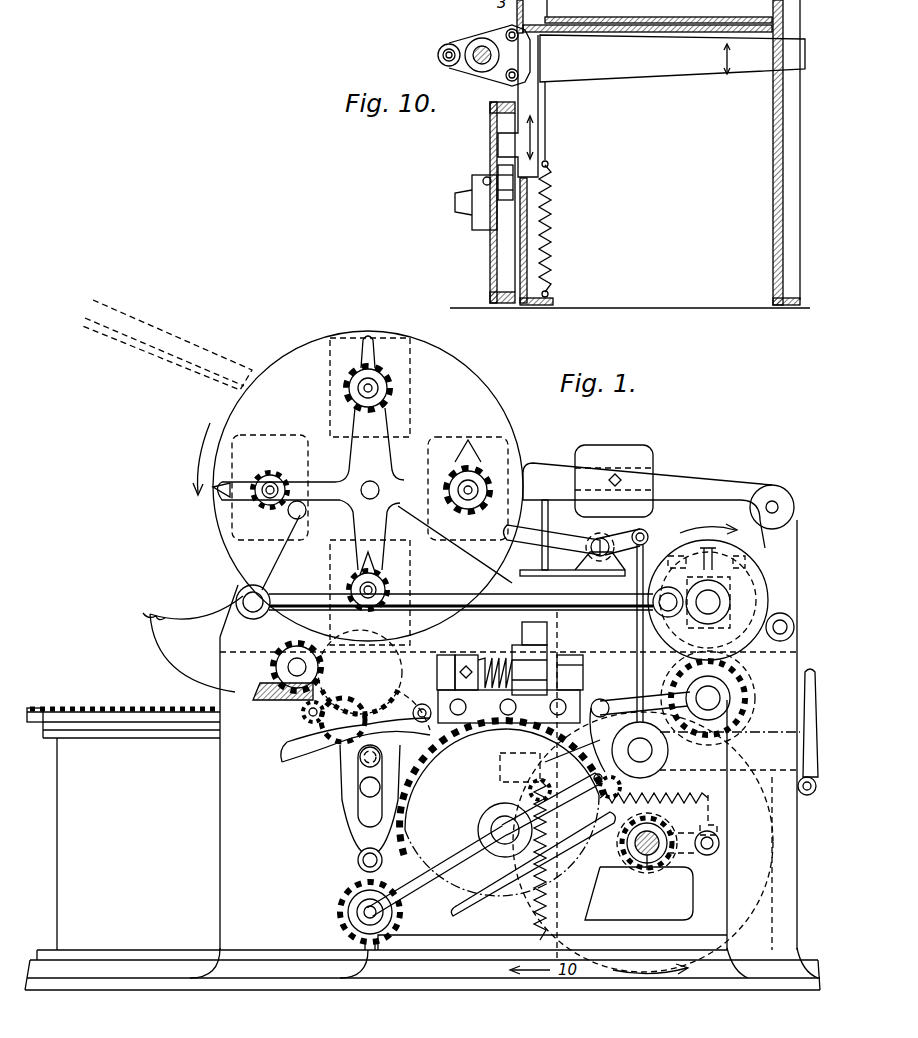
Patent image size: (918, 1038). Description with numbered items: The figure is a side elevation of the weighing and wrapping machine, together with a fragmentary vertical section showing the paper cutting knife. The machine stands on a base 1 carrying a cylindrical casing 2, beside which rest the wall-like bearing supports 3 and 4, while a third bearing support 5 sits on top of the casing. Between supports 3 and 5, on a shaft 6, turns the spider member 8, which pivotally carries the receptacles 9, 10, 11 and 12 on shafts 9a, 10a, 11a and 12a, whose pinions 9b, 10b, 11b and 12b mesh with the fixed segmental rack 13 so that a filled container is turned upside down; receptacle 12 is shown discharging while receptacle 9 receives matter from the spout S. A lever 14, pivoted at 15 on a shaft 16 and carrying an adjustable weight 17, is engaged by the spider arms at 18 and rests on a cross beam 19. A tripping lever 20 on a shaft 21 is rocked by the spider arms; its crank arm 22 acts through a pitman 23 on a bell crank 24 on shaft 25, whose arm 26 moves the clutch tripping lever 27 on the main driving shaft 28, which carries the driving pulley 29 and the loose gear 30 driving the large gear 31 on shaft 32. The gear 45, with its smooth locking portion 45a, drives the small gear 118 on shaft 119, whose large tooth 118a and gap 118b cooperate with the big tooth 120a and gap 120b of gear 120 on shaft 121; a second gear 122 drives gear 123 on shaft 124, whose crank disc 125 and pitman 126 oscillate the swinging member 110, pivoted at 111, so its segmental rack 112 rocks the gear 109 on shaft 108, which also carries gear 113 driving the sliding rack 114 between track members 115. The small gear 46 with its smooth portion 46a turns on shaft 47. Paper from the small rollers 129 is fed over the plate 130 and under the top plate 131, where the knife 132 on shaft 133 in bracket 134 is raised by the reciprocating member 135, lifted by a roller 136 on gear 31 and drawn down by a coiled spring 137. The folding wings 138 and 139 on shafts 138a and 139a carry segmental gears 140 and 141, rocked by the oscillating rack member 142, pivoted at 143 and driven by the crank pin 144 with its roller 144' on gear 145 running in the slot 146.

In FIG. 1, the base 1 is at (155, 972).
In FIG. 1, the cylindrical casing 2 is at (78, 812).
In FIG. 1, the bearing support 3 is at (798, 545).
In FIG. 1, the bearing support 4 is at (413, 937).
In FIG. 10, the bearing support 5 is at (783, 146).
In FIG. 1, the shaft 6 is at (374, 488).
In FIG. 1, the spider member 8 is at (340, 478).
In FIG. 1, the receptacle 9 is at (270, 452).
In FIG. 1, the shaft 9a is at (273, 486).
In FIG. 1, the pinion 9b is at (262, 480).
In FIG. 1, the receptacle 10 is at (398, 368).
In FIG. 1, the shaft 10a is at (380, 389).
In FIG. 1, the pinion 10b is at (360, 375).
In FIG. 1, the receptacle 11 is at (472, 452).
In FIG. 1, the shaft 11a is at (470, 488).
In FIG. 1, the pinion 11b is at (462, 482).
In FIG. 1, the receptacle 12 is at (338, 575).
In FIG. 1, the shaft 12a is at (374, 586).
In FIG. 1, the pinion 12b is at (360, 584).
In FIG. 1, the segmental rack 13 is at (440, 592).
In FIG. 1, the lever 14 is at (692, 484).
In FIG. 1, the pivot 15 is at (772, 488).
In FIG. 1, the shaft 16 is at (777, 505).
In FIG. 1, the weight 17 is at (617, 465).
In FIG. 1, the engagement point 18 is at (545, 482).
In FIG. 1, the cross beam 19 is at (549, 525).
In FIG. 1, the tripping lever 20 is at (574, 545).
In FIG. 1, the shaft 21 is at (600, 540).
In FIG. 1, the crank arm 22 is at (638, 530).
In FIG. 1, the pitman 23 is at (637, 638).
In FIG. 1, the bell crank 24 is at (616, 702).
In FIG. 1, the shaft 25 is at (594, 729).
In FIG. 1, the arm 26 is at (551, 798).
In FIG. 1, the tripping lever 27 is at (533, 864).
In FIG. 1, the main driving shaft 28 is at (646, 866).
In FIG. 1, the driving pulley 29 is at (740, 895).
In FIG. 1, the gear 30 is at (653, 873).
In FIG. 10, the large gear 31 is at (490, 255).
In FIG. 10, the shaft 32 is at (460, 203).
In FIG. 1, the shaft 32 is at (490, 830).
In FIG. 1, the large gear 45 is at (502, 808).
In FIG. 1, the smooth locking portion 45a is at (545, 752).
In FIG. 1, the small gear 46 is at (342, 905).
In FIG. 1, the smooth locking portion 46a is at (437, 876).
In FIG. 1, the shaft 47 is at (360, 918).
In FIG. 1, the shaft 108 is at (295, 668).
In FIG. 1, the gear 109 is at (285, 646).
In FIG. 1, the swinging member 110 is at (232, 612).
In FIG. 1, the pivot 111 is at (303, 516).
In FIG. 1, the segmental rack 112 is at (152, 614).
In FIG. 1, the gear 113 is at (312, 720).
In FIG. 1, the sliding rack 114 is at (40, 710).
In FIG. 1, the track member 115 is at (162, 720).
In FIG. 1, the small gear 118 is at (667, 746).
In FIG. 1, the large tooth 118a is at (598, 783).
In FIG. 1, the gap 118b is at (630, 787).
In FIG. 1, the shaft 119 is at (658, 807).
In FIG. 1, the gear 120 is at (745, 712).
In FIG. 1, the big tooth 120a is at (731, 698).
In FIG. 1, the gap 120b is at (745, 682).
In FIG. 1, the shaft 121 is at (720, 700).
In FIG. 1, the gear 122 is at (742, 728).
In FIG. 1, the gear 123 is at (765, 590).
In FIG. 1, the shaft 124 is at (720, 602).
In FIG. 1, the crank disc 125 is at (735, 580).
In FIG. 1, the pitman 126 is at (459, 610).
In FIG. 1, the small rollers 129 is at (790, 636).
In FIG. 10, the plate 130 is at (690, 31).
In FIG. 1, the plate 130 is at (615, 658).
In FIG. 10, the top plate 131 is at (652, 19).
In FIG. 1, the top plate 131 is at (552, 650).
In FIG. 10, the knife 132 is at (660, 57).
In FIG. 1, the knife 132 is at (516, 652).
In FIG. 10, the shaft 133 is at (480, 44).
In FIG. 1, the shaft 133 is at (584, 674).
In FIG. 1, the bracket member 134 is at (509, 706).
In FIG. 10, the reciprocating member 135 is at (527, 102).
In FIG. 1, the reciprocating member 135 is at (510, 758).
In FIG. 10, the roller 136 is at (503, 180).
In FIG. 1, the roller 136 is at (530, 795).
In FIG. 10, the coiled spring 137 is at (553, 234).
In FIG. 1, the coiled spring 137 is at (536, 875).
In FIG. 1, the side folding wing 138 is at (360, 672).
In FIG. 1, the shaft 138a is at (323, 719).
In FIG. 1, the side folding wing 139 is at (420, 690).
In FIG. 1, the shaft 139a is at (418, 708).
In FIG. 1, the segmental gear 140 is at (355, 732).
In FIG. 1, the segmental gear 141 is at (407, 714).
In FIG. 1, the oscillating rack member 142 is at (340, 748).
In FIG. 1, the pivot 143 is at (358, 862).
In FIG. 1, the crank pin 144 is at (344, 798).
In FIG. 1, the roller 144' is at (334, 769).
In FIG. 1, the gear 145 is at (358, 800).
In FIG. 1, the slot 146 is at (366, 805).
In FIG. 1, the spout S is at (165, 343).